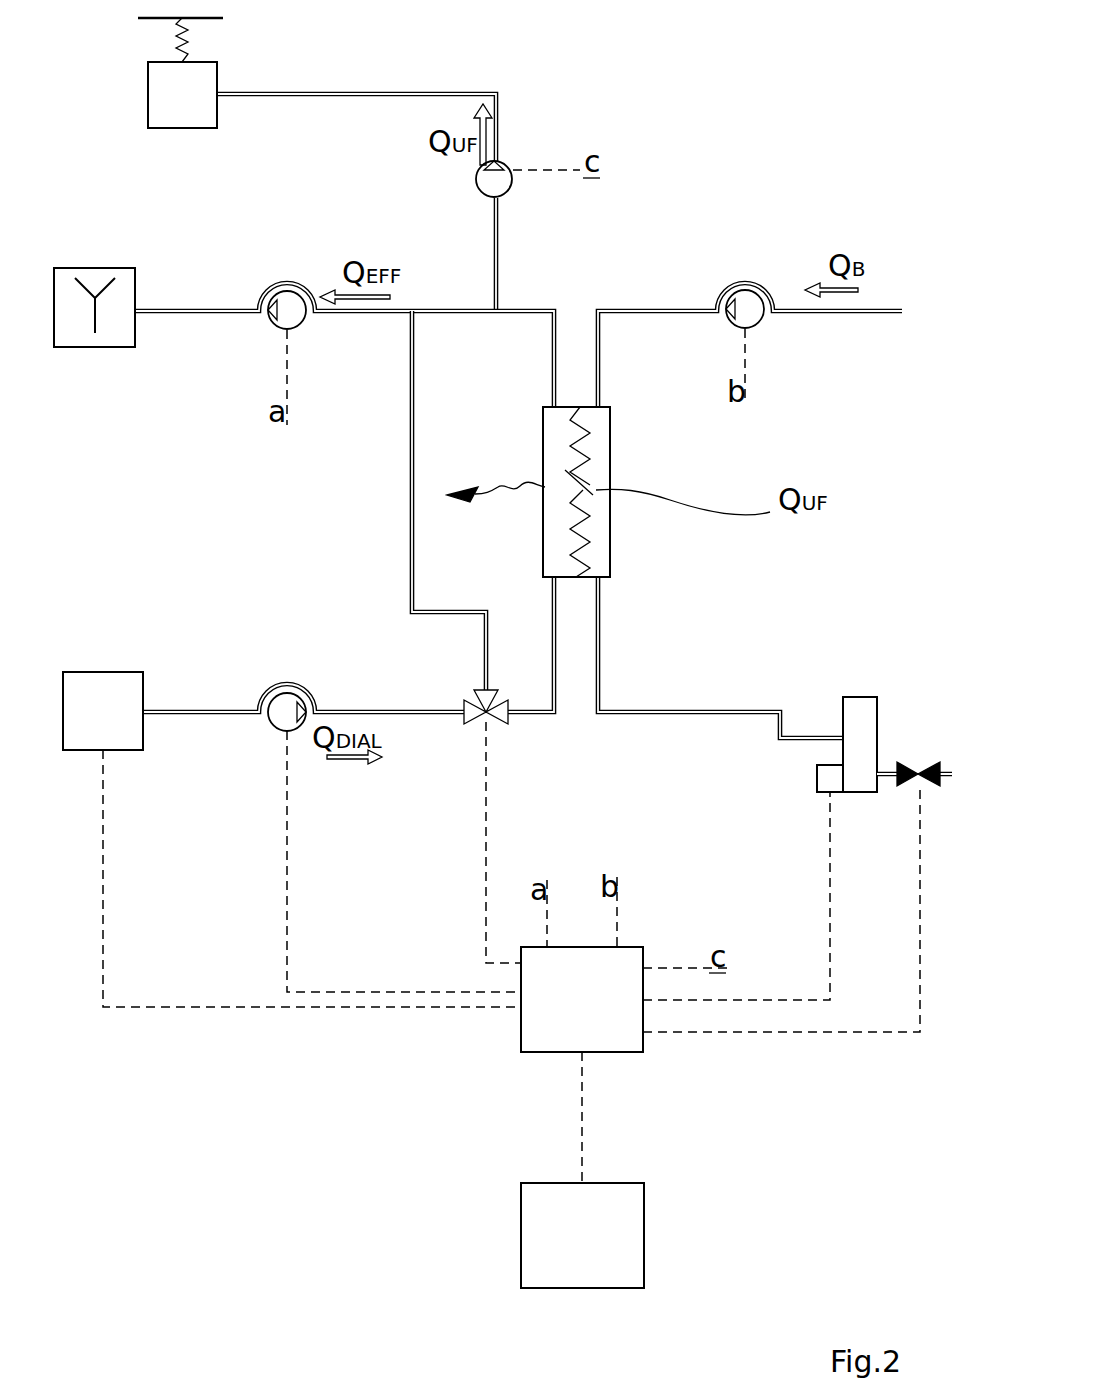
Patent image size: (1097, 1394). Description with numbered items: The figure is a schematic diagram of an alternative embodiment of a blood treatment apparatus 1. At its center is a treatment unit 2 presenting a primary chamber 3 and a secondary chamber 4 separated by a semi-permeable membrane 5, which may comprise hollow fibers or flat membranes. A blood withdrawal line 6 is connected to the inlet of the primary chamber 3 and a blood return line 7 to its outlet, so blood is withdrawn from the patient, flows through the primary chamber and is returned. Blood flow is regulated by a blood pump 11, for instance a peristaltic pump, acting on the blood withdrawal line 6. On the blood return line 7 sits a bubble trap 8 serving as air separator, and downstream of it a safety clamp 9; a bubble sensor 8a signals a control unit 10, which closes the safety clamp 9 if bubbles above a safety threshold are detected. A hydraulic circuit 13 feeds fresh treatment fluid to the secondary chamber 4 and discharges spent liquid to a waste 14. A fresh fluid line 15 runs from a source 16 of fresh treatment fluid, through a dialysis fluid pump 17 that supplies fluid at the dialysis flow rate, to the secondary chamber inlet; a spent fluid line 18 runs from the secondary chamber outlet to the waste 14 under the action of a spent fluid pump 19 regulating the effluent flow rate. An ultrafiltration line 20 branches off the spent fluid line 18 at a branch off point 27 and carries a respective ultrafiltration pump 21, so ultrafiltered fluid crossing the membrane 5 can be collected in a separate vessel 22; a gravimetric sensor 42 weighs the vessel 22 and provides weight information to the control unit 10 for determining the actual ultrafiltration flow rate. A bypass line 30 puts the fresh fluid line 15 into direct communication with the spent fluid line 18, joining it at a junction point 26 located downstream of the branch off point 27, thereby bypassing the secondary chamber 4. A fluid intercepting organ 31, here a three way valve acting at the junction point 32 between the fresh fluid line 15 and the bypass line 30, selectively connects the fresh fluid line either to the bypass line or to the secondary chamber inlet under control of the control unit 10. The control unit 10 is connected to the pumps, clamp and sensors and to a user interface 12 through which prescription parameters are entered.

The apparatus 1 is at (730, 140).
The treatment unit 2 is at (612, 562).
The primary chamber 3 is at (598, 452).
The secondary chamber 4 is at (550, 515).
The semi-permeable membrane 5 is at (568, 456).
The blood withdrawal line 6 is at (840, 315).
The blood return line 7 is at (773, 712).
The bubble trap 8 is at (862, 697).
The bubble sensor 8a is at (832, 774).
The safety clamp 9 is at (918, 770).
The control unit 10 is at (600, 1015).
The blood pump 11 is at (752, 302).
The user interface 12 is at (600, 1250).
The hydraulic circuit 13 is at (172, 785).
The waste 14 is at (98, 268).
The fresh fluid line 15 is at (370, 711).
The source of fresh treatment fluid 16 is at (120, 725).
The dialysis fluid pump 17 is at (286, 707).
The spent fluid line 18 is at (390, 309).
The spent fluid pump 19 is at (287, 305).
The ultrafiltration line 20 is at (500, 250).
The ultrafiltration pump 21 is at (503, 165).
The vessel 22 is at (200, 110).
The junction point 26 is at (414, 309).
The branch off point 27 is at (492, 313).
The bypass line 30 is at (408, 400).
The fluid intercepting organ 31 is at (508, 722).
The junction point 32 is at (484, 720).
The gravimetric sensor 42 is at (190, 38).